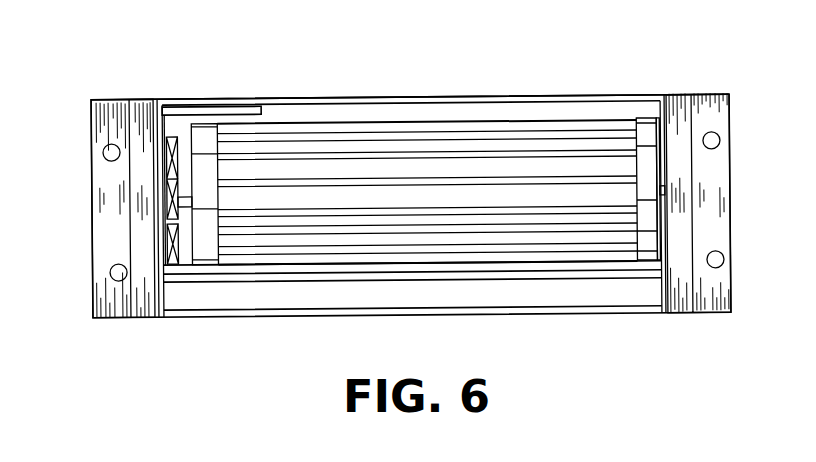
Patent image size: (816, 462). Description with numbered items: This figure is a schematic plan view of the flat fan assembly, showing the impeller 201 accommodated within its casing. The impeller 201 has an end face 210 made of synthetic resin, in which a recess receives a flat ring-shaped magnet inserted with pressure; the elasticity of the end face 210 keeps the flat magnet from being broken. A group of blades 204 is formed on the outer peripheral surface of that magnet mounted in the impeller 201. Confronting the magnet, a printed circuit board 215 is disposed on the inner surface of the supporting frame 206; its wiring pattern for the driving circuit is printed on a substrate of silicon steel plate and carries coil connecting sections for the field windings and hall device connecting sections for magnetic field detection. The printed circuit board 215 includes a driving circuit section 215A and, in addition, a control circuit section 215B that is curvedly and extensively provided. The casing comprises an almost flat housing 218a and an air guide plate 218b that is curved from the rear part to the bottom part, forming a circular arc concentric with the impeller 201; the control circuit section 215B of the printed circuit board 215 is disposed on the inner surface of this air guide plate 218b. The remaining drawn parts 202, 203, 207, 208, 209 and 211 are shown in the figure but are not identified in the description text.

The impeller 201 is at (426, 148).
The layer 202 is at (393, 195).
The end plate 203 is at (587, 137).
The group of blades 204 is at (303, 168).
The supporting frame 206 is at (132, 107).
The right end block 207 is at (678, 113).
The top bar 208 is at (168, 100).
The projection 209 is at (667, 190).
The end face of the impeller 210 is at (209, 137).
The end strip 211 is at (650, 133).
The printed circuit board 215 is at (162, 186).
The driving circuit section 215A is at (162, 232).
The control circuit section 215B is at (183, 195).
The housing 218a is at (408, 290).
The air guide plate 218b is at (388, 97).